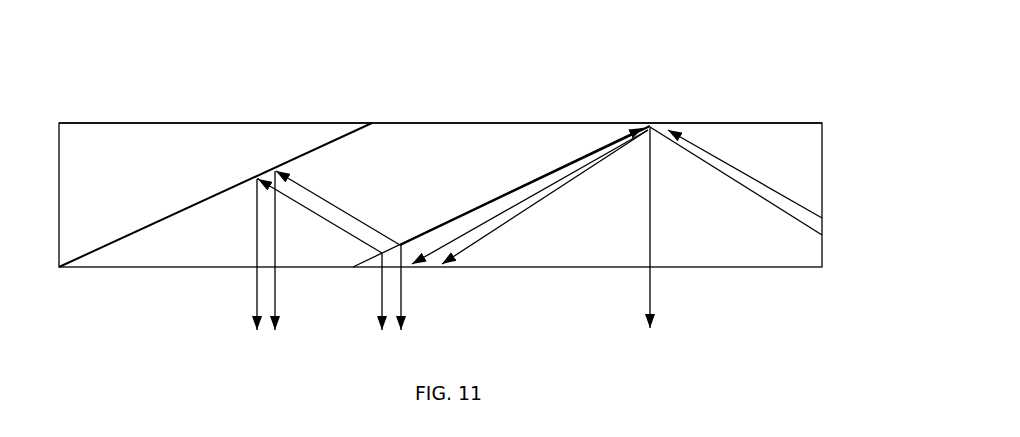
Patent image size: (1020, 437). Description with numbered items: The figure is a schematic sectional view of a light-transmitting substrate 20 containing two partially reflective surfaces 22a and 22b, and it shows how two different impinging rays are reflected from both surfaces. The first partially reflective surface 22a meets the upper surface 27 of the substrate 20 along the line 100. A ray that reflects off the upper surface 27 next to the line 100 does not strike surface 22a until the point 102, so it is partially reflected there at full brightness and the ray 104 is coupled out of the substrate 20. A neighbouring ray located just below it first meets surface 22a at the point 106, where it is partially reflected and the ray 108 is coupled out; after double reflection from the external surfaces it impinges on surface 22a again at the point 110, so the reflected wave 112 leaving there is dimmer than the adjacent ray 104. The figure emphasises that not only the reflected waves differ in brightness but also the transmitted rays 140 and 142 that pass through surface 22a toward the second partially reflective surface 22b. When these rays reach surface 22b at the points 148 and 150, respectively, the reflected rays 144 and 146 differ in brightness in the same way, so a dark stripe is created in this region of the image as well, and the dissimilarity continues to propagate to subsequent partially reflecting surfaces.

The substrate 20 is at (778, 132).
The upper surface 27 is at (737, 122).
The partially reflective surface 22a is at (493, 203).
The partially reflective surface 22b is at (193, 205).
The line 100 is at (663, 122).
The point 102 is at (393, 240).
The ray 104 is at (403, 297).
The point 106 is at (652, 118).
The ray 108 is at (650, 282).
The point 110 is at (362, 263).
The reflected wave 112 is at (373, 283).
The transmitted ray 140 is at (803, 205).
The transmitted ray 142 is at (813, 228).
The reflected ray 144 is at (283, 320).
The reflected ray 146 is at (253, 288).
The point 148 is at (272, 165).
The point 150 is at (252, 173).